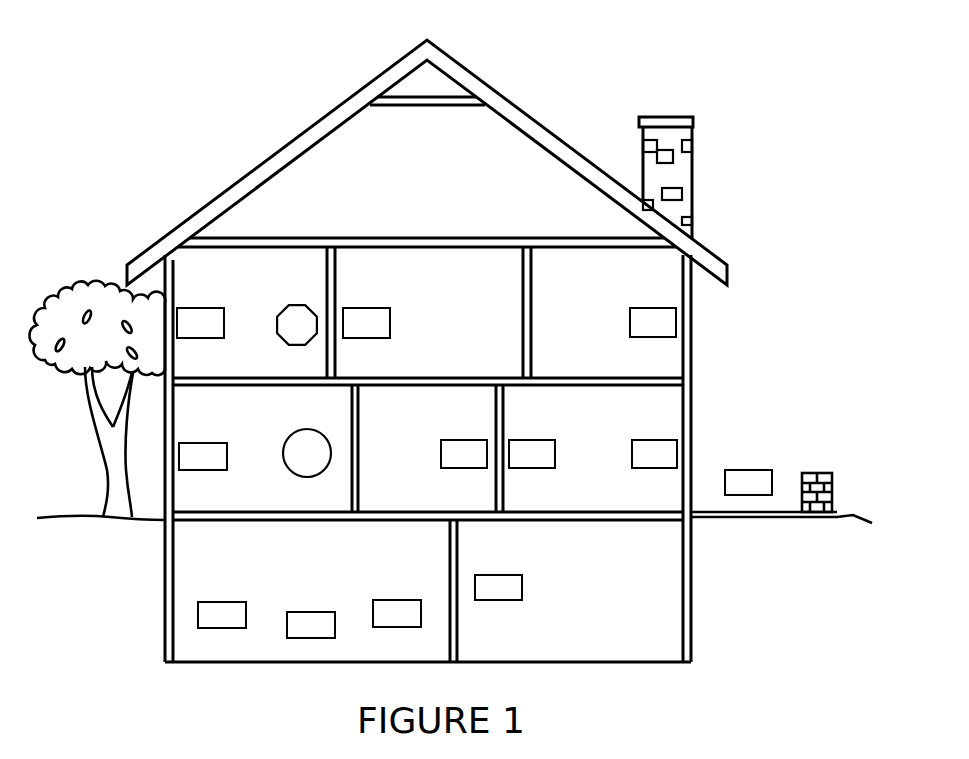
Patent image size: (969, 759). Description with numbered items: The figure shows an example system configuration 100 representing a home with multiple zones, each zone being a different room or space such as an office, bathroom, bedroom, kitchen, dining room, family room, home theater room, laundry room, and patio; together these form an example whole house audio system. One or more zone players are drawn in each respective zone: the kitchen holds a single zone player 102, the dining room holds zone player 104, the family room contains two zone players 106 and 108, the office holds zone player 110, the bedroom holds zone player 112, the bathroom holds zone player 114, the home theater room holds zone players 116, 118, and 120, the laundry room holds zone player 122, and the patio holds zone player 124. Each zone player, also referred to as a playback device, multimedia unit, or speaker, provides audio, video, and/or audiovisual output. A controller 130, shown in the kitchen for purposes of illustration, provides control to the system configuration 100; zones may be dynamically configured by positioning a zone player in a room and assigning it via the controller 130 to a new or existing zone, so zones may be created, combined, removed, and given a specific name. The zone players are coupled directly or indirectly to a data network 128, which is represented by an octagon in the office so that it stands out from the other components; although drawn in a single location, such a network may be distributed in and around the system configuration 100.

The system configuration 100 is at (199, 84).
The zone player 102 is at (203, 456).
The zone player 104 is at (464, 454).
The zone player 106 is at (532, 454).
The zone player 108 is at (654, 454).
The zone player 110 is at (200, 323).
The zone player 112 is at (653, 323).
The zone player 114 is at (366, 323).
The zone player 116 is at (222, 615).
The zone player 118 is at (397, 613).
The zone player 120 is at (311, 625).
The zone player 122 is at (498, 587).
The zone player 124 is at (781, 495).
The data network 128 is at (297, 325).
The controller 130 is at (307, 453).